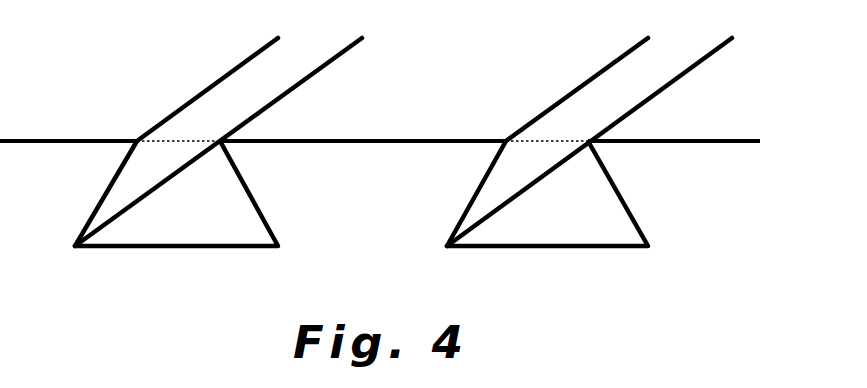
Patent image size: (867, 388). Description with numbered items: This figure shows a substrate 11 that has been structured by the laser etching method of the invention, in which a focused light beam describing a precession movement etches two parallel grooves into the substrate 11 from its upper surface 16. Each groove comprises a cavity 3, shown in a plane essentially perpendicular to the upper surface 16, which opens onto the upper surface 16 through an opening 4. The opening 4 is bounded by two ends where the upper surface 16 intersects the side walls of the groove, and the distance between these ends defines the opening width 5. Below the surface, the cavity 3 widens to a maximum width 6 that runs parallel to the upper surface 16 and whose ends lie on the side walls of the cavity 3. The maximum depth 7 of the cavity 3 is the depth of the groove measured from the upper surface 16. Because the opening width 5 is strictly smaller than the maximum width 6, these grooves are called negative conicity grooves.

The cavity 3 is at (212, 232).
The opening 4 is at (256, 65).
The opening width 5 is at (506, 38).
The maximum width 6 is at (75, 248).
The maximum depth 7 is at (177, 155).
The substrate 11 is at (3, 190).
The upper surface 16 is at (414, 123).